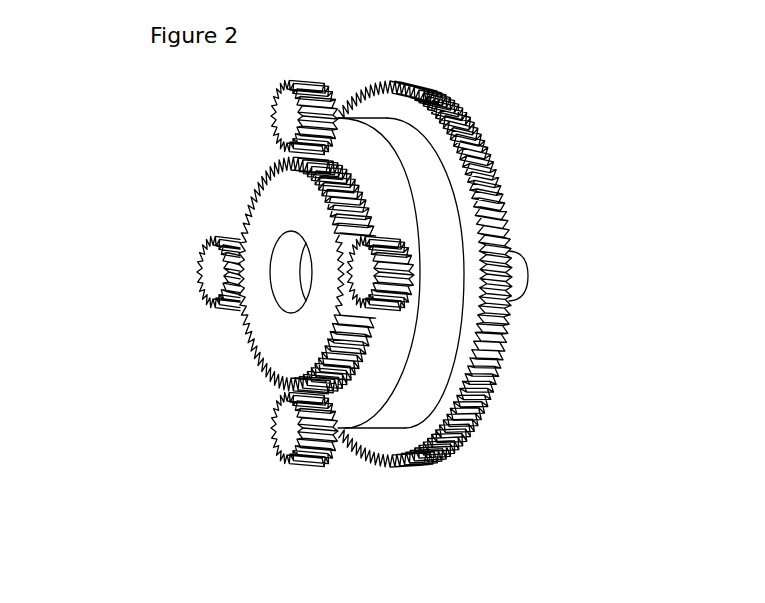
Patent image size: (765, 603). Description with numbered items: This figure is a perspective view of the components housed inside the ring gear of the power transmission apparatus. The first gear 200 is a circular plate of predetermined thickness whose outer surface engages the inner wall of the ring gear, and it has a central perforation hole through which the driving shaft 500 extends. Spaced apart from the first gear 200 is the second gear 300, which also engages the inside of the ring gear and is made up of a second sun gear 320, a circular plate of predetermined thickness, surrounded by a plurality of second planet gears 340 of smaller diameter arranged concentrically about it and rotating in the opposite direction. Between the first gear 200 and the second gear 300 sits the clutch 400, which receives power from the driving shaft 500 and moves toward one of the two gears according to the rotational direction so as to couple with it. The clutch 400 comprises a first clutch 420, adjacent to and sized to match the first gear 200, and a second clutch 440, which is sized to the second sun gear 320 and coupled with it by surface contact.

The first gear 200 is at (497, 355).
The second gear 300 is at (244, 273).
The second sun gear 320 is at (270, 210).
The second planet gears 340 is at (216, 274).
The clutch 400 is at (412, 336).
The first clutch 420 is at (437, 343).
The second clutch 440 is at (377, 330).
The driving shaft 500 is at (522, 273).